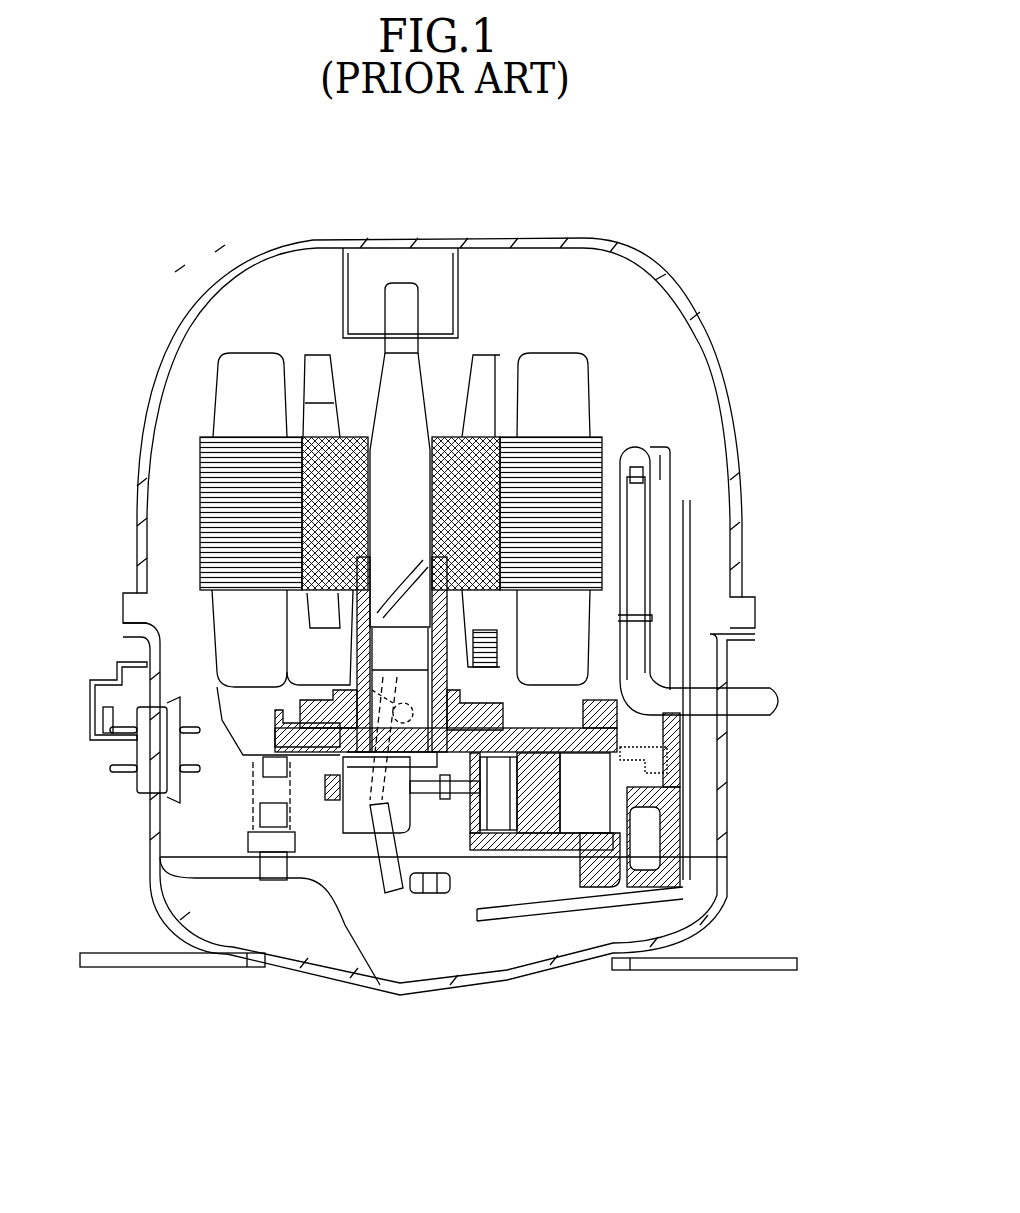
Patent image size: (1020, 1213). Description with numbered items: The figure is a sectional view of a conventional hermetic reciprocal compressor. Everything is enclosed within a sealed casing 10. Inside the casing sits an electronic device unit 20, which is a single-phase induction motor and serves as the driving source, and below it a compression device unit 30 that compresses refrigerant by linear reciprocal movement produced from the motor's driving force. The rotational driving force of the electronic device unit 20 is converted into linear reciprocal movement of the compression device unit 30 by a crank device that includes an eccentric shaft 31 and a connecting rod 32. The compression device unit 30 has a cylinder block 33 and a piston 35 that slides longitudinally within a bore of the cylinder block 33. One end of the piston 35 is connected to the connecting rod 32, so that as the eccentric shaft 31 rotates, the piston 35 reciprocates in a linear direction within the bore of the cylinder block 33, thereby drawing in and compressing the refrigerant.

The sealed casing 10 is at (735, 532).
The electronic device unit 20 is at (545, 346).
The compression device unit 30 is at (498, 860).
The eccentric shaft 31 is at (393, 513).
The connecting rod 32 is at (440, 807).
The cylinder block 33 is at (560, 850).
The piston 35 is at (523, 850).